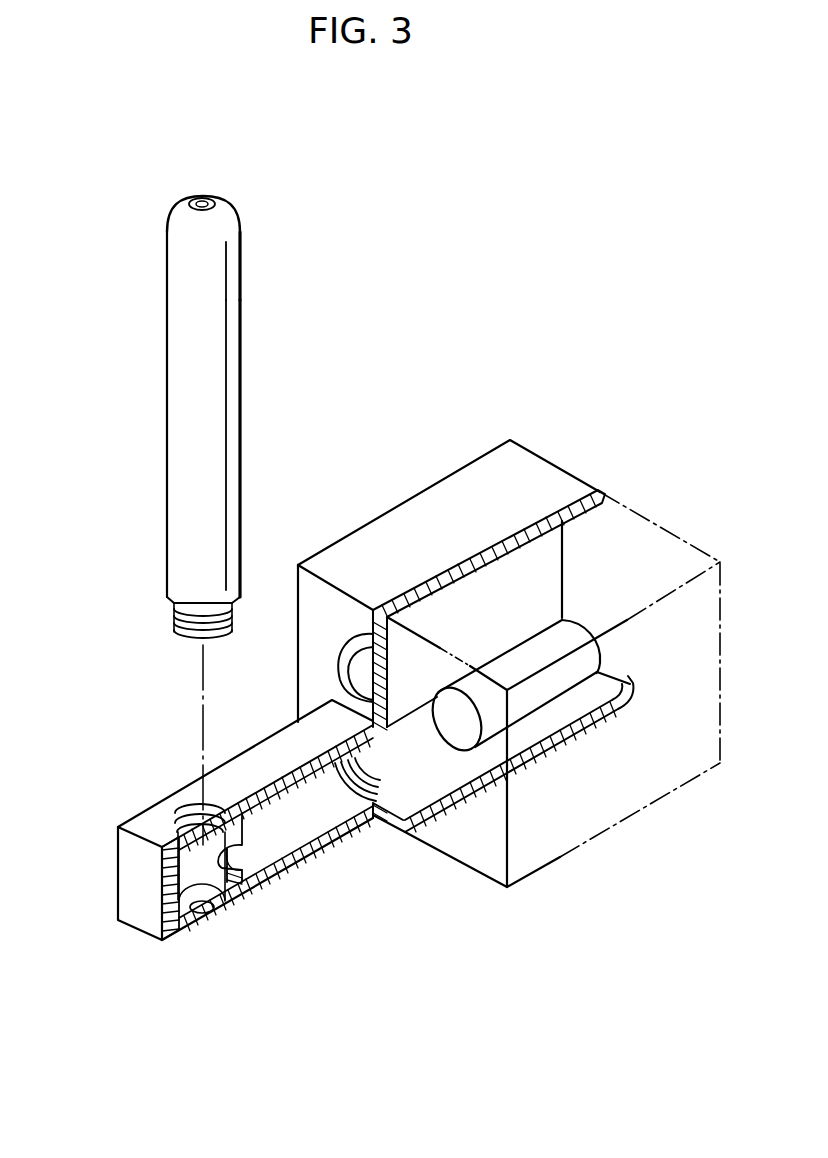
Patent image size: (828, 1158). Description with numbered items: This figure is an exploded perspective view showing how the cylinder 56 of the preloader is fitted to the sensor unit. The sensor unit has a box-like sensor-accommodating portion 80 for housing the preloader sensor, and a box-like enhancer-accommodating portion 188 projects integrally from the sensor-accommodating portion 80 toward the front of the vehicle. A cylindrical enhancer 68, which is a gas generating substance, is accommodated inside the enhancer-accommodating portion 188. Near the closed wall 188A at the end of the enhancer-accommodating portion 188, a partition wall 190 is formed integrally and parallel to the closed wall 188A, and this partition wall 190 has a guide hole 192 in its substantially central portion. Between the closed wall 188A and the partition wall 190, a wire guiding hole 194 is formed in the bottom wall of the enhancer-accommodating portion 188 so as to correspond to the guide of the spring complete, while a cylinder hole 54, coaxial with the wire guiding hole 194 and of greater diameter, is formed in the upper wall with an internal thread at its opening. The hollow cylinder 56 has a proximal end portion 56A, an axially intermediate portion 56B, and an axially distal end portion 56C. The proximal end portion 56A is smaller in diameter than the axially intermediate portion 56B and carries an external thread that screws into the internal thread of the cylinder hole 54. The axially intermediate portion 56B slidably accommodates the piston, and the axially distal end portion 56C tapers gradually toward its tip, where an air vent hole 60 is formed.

The cylinder 56 is at (132, 417).
The proximal end portion 56A is at (159, 563).
The axially intermediate portion 56B is at (167, 477).
The axially distal end portion 56C is at (170, 235).
The air vent hole 60 is at (203, 197).
The cylinder hole 54 is at (195, 808).
The enhancer 68 is at (465, 735).
The sensor-accommodating portion 80 is at (486, 879).
The enhancer-accommodating portion 188 is at (248, 859).
The closed wall 188A is at (170, 940).
The partition wall 190 is at (234, 880).
The guide hole 192 is at (248, 846).
The wire guiding hole 194 is at (210, 912).